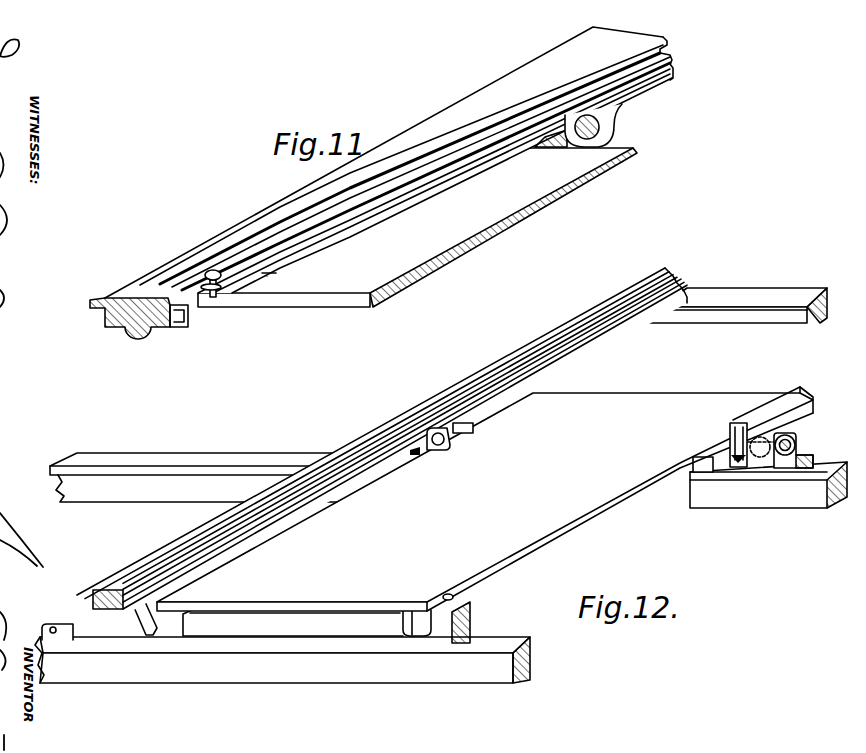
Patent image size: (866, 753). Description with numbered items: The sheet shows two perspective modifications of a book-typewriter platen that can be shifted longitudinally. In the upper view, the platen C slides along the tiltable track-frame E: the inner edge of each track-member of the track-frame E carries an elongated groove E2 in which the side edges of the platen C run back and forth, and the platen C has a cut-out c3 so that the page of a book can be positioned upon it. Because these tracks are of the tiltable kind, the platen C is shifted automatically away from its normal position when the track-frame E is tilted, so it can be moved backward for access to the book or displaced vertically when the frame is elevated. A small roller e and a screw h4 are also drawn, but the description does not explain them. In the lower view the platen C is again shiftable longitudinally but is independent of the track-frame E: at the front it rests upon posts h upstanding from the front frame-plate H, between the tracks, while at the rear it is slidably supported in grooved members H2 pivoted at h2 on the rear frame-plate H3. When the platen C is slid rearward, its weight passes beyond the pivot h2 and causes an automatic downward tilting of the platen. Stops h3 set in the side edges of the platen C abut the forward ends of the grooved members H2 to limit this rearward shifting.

In FIG. 11, the tiltable track-frame E is at (200, 252).
In FIG. 12, the tiltable track-frame E is at (173, 547).
In FIG. 11, the elongated groove E2 is at (190, 312).
In FIG. 11, the roller e is at (600, 128).
In FIG. 12, the roller e is at (437, 433).
In FIG. 11, the platen C is at (417, 227).
In FIG. 12, the platen C is at (485, 502).
In FIG. 11, the cut-out c3 is at (268, 274).
In FIG. 11, the screw h4 is at (217, 270).
In FIG. 12, the front frame-plate H is at (358, 640).
In FIG. 12, the grooved members H2 is at (533, 391).
In FIG. 12, the rear frame-plate H3 is at (763, 468).
In FIG. 12, the posts h is at (407, 630).
In FIG. 12, the pivot h2 is at (790, 433).
In FIG. 12, the stops h3 is at (453, 597).